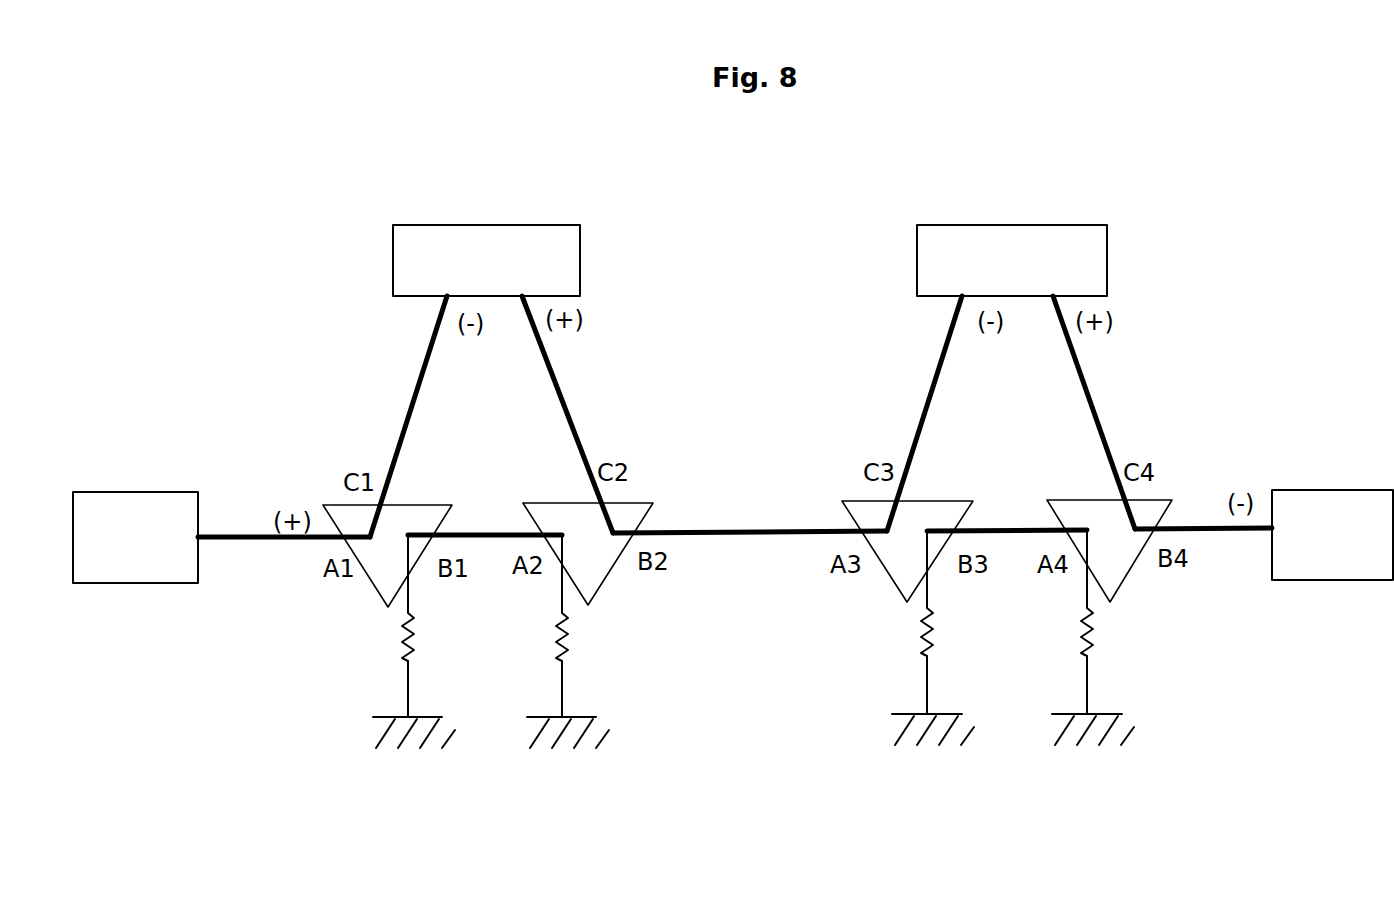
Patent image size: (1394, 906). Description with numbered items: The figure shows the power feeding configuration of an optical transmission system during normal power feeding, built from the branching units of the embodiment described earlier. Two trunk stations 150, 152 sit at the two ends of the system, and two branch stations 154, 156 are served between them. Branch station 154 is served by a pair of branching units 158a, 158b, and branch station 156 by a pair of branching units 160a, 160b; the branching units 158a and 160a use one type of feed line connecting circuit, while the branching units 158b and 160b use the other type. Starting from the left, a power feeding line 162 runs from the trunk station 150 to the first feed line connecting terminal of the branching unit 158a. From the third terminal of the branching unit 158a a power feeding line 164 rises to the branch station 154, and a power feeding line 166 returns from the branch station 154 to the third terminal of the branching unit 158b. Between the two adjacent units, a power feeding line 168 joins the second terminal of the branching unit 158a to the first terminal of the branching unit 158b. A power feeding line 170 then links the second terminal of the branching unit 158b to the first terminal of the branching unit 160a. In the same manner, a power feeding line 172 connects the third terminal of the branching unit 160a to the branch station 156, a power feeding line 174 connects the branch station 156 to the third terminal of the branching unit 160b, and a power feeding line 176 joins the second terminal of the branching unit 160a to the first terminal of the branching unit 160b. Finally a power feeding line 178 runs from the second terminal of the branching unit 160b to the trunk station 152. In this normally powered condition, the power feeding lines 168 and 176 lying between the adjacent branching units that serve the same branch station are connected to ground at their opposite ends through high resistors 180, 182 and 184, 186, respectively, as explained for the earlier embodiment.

The trunk station 150 is at (146, 492).
The trunk station 152 is at (1338, 488).
The branch station 154 is at (580, 270).
The branch station 156 is at (1107, 257).
The branching unit 158a is at (373, 567).
The branching unit 158b is at (610, 570).
The branching unit 160a is at (892, 570).
The branching unit 160b is at (1127, 563).
The power feeding line 162 is at (249, 530).
The power feeding line 164 is at (416, 380).
The power feeding line 166 is at (570, 404).
The power feeding line 168 is at (492, 540).
The power feeding line 170 is at (755, 529).
The power feeding line 172 is at (935, 378).
The power feeding line 174 is at (1090, 392).
The power feeding line 176 is at (1015, 533).
The power feeding line 178 is at (1223, 533).
The high resistor 180 is at (387, 648).
The high resistor 182 is at (582, 632).
The high resistor 184 is at (908, 642).
The high resistor 186 is at (1100, 635).